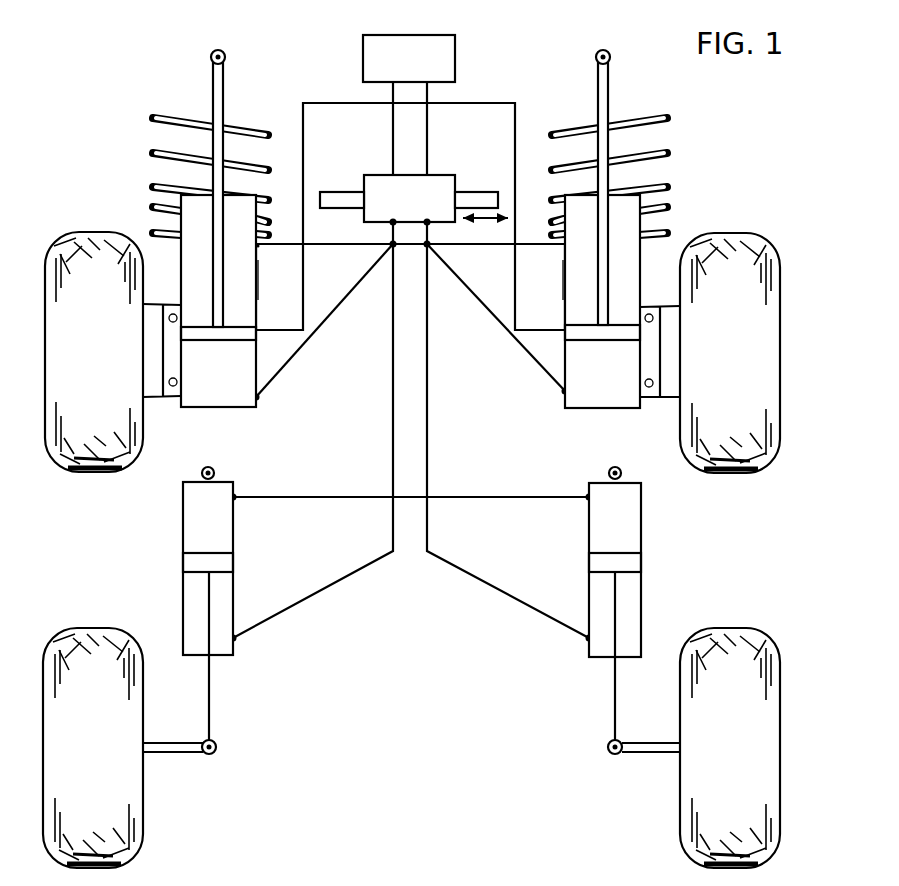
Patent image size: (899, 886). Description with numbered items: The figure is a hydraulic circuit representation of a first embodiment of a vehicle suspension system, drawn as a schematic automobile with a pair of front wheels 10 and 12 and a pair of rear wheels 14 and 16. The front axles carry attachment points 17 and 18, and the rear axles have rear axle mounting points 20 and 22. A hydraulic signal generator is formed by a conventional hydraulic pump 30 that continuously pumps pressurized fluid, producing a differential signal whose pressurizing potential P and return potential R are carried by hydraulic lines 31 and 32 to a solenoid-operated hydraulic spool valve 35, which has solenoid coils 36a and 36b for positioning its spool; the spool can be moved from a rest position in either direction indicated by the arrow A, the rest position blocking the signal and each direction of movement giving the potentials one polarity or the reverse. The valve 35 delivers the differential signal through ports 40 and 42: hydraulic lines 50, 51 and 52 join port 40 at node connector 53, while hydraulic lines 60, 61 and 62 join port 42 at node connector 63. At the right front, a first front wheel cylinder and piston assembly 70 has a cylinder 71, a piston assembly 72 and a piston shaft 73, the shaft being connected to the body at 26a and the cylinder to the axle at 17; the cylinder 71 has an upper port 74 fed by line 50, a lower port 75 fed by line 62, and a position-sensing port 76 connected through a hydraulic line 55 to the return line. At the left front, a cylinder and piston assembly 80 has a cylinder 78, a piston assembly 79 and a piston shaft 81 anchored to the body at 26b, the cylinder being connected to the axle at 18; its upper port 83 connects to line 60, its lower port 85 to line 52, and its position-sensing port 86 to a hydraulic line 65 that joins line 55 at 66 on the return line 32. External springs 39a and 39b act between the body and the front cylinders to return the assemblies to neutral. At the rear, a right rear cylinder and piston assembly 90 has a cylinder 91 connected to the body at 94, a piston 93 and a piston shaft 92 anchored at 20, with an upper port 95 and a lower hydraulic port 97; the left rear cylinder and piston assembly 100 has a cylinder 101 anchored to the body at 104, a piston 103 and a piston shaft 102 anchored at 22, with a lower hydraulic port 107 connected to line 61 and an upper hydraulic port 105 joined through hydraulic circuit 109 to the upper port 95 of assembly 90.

The front wheel 10 is at (742, 233).
The front wheel 12 is at (80, 232).
The rear wheel 14 is at (756, 628).
The rear wheel 16 is at (84, 628).
The attachment point 17 is at (672, 397).
The attachment point 18 is at (152, 397).
The rear axle mounting point 20 is at (614, 754).
The rear axle mounting point 22 is at (214, 754).
The right front body connection 26a is at (610, 52).
The left front body anchor 26b is at (226, 40).
The hydraulic pump 30 is at (438, 35).
The hydraulic line 31 is at (392, 96).
The hydraulic line 32 is at (428, 102).
The hydraulic spool valve 35 is at (364, 175).
The solenoid coil 36a is at (336, 192).
The solenoid coil 36b is at (474, 192).
The external spring 39a is at (156, 116).
The external spring 39b is at (663, 116).
The valve port 40 is at (429, 226).
The valve port 42 is at (390, 226).
The hydraulic line 50 is at (479, 258).
The hydraulic line 51 is at (428, 334).
The hydraulic line 52 is at (312, 360).
The node connector 53 is at (430, 250).
The hydraulic line 55 is at (518, 308).
The hydraulic line 60 is at (324, 250).
The hydraulic line 61 is at (393, 334).
The hydraulic line 62 is at (462, 302).
The node connector 63 is at (390, 250).
The hydraulic line 65 is at (304, 308).
The return connection 66 is at (428, 100).
The first front wheel cylinder and piston assembly 70 is at (598, 251).
The cylinder 71 is at (646, 282).
The piston assembly 72 is at (600, 342).
The piston shaft 73 is at (608, 270).
The upper port 74 is at (565, 246).
The lower port 75 is at (563, 394).
The position-sensing port 76 is at (565, 332).
The cylinder 78 is at (258, 288).
The piston assembly 79 is at (236, 334).
The cylinder and piston assembly 80 is at (227, 237).
The piston shaft 81 is at (214, 270).
The upper port 83 is at (262, 250).
The lower port 85 is at (260, 398).
The position-sensing port 86 is at (258, 332).
The rear wheel cylinder and piston assembly 90 is at (594, 614).
The cylinder 91 is at (644, 548).
The piston shaft 92 is at (615, 716).
The piston 93 is at (640, 572).
The body connection 94 is at (618, 468).
The upper port 95 is at (586, 500).
The lower hydraulic port 97 is at (586, 640).
The cylinder and piston assembly 100 is at (231, 614).
The cylinder 101 is at (236, 530).
The piston shaft 102 is at (210, 724).
The piston 103 is at (196, 562).
The body anchor 104 is at (220, 456).
The upper hydraulic port 105 is at (236, 496).
The lower hydraulic port 107 is at (236, 640).
The hydraulic circuit 109 is at (470, 497).
The arrow A is at (490, 216).
The pressurizing potential P is at (392, 86).
The return potential R is at (428, 86).